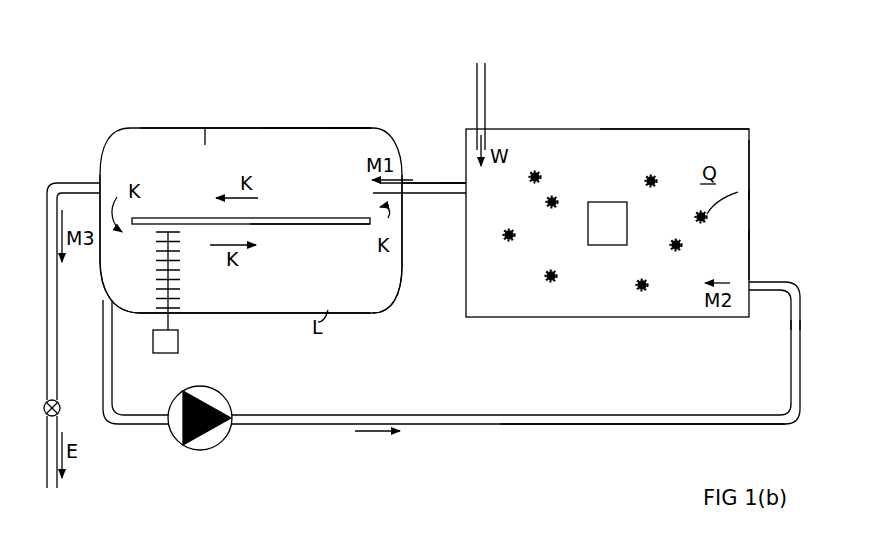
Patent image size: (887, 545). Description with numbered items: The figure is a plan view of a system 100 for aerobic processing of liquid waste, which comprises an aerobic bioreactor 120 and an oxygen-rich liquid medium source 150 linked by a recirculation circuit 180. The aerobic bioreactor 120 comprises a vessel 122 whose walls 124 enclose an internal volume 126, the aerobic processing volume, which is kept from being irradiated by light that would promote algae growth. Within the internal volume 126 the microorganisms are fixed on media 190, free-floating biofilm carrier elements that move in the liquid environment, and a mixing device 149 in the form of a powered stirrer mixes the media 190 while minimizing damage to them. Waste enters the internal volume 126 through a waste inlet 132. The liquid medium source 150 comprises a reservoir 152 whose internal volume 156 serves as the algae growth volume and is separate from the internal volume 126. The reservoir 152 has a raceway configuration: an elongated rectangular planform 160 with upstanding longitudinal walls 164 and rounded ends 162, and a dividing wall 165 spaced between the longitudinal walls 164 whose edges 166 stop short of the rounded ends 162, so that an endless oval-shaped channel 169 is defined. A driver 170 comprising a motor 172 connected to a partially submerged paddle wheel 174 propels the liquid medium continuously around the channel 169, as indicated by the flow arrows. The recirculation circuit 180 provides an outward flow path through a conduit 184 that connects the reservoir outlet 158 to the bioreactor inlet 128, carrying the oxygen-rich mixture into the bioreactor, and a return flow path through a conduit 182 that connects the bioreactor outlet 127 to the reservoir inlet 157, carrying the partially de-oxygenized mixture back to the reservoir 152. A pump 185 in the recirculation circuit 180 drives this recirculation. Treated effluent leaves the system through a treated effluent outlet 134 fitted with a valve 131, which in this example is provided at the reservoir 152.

The system for aerobic processing of waste 100 is at (397, 84).
The aerobic bioreactor 120 is at (752, 142).
The vessel 122 is at (749, 250).
The walls 124 is at (749, 215).
The internal volume 126 is at (672, 157).
The bioreactor outlet 127 is at (462, 178).
The bioreactor inlet 128 is at (782, 276).
The valve 131 is at (60, 412).
The waste inlet 132 is at (486, 78).
The treated effluent outlet 134 is at (55, 488).
The mixing device 149 is at (607, 202).
The oxygen-rich liquid medium source 150 is at (250, 126).
The reservoir 152 is at (205, 128).
The internal volume 156 is at (308, 211).
The reservoir inlet 157 is at (426, 180).
The reservoir outlet 158 is at (103, 298).
The planform 160 is at (303, 128).
The rounded ends 162 is at (100, 250).
The longitudinal walls 164 is at (166, 128).
The dividing wall 165 is at (300, 229).
The edge 166 is at (120, 178).
The channel 169 is at (338, 145).
The driver 170 is at (152, 355).
The motor 172 is at (178, 343).
The paddle wheel 174 is at (178, 272).
The recirculation circuit 180 is at (564, 438).
The conduit 182 is at (425, 194).
The conduit 184 is at (745, 424).
The pump 185 is at (218, 446).
The media 190 is at (749, 190).